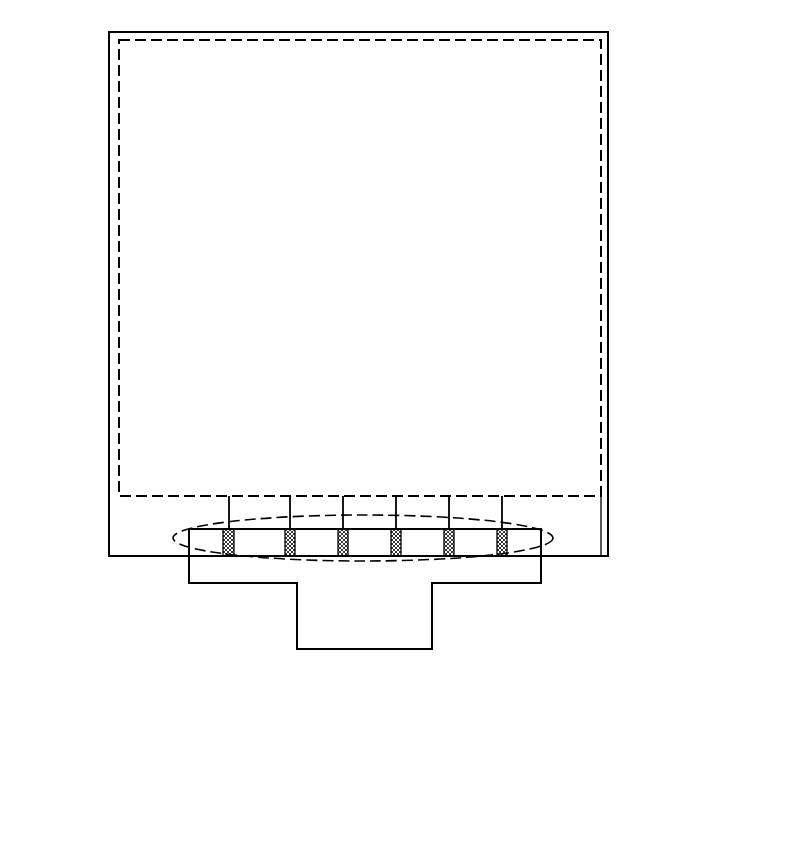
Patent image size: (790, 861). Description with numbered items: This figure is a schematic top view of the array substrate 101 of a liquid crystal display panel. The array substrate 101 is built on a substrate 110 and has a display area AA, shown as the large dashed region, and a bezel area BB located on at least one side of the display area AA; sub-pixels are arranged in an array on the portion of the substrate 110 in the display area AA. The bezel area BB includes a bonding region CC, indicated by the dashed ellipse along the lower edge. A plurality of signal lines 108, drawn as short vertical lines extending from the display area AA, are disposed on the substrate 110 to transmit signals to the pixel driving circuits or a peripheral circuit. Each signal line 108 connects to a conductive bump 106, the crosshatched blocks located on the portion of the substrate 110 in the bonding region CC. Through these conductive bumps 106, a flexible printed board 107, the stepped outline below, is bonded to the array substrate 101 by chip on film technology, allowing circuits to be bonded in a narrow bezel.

The array substrate 101 is at (83, 58).
The substrate 110 is at (588, 528).
The display area AA is at (119, 378).
The bezel area BB is at (124, 516).
The bonding region CC is at (178, 540).
The flexible printed board 107 is at (471, 577).
The conductive bump 106 is at (452, 545).
The signal line 108 is at (343, 504).